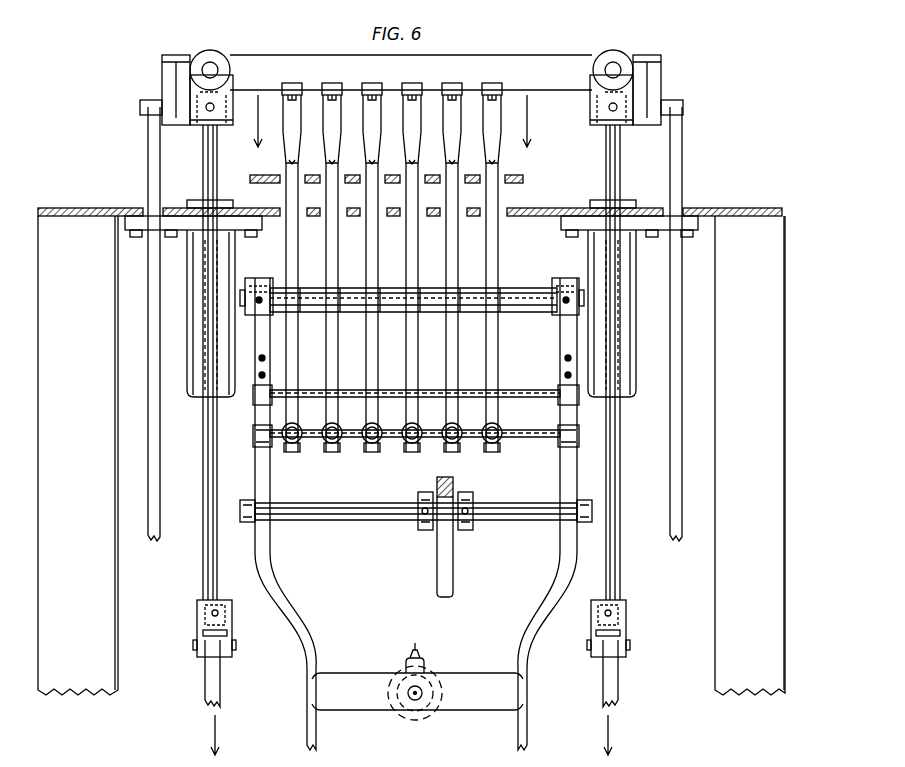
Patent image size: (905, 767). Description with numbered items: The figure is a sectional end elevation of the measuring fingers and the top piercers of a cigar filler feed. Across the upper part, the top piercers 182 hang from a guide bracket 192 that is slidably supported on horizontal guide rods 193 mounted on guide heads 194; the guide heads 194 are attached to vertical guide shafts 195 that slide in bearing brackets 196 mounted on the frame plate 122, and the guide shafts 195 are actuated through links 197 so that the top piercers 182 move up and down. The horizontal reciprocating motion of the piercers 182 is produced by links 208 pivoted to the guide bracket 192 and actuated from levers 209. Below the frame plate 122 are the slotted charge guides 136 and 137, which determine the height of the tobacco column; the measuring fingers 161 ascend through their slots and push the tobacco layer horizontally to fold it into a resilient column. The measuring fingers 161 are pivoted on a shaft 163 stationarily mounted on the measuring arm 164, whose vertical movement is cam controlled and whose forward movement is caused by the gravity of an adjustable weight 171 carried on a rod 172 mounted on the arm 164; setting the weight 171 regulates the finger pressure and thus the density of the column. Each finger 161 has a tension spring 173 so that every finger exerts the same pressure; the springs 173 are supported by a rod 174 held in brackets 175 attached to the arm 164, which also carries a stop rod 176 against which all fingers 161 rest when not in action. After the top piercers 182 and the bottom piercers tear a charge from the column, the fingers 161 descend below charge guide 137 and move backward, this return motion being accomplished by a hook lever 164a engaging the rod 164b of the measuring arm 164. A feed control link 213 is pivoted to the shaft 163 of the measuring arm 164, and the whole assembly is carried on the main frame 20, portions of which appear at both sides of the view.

The main frame 20 is at (112, 690).
The frame plate 122 is at (128, 207).
The charge guide 136 is at (270, 183).
The charge guide 137 is at (312, 217).
The measuring fingers 161 is at (446, 180).
The shaft 163 is at (243, 300).
The measuring arm 164 is at (556, 282).
The hook lever 164a is at (455, 588).
The rod 164b is at (372, 515).
The adjustable weight 171 is at (427, 666).
The rod 172 is at (422, 694).
The tension springs 173 is at (340, 447).
The rod 174 is at (512, 433).
The brackets 175 is at (253, 433).
The stop rod 176 is at (518, 397).
The top piercers 182 is at (333, 83).
The guide bracket 192 is at (548, 44).
The horizontal guide rods 193 is at (210, 68).
The guide heads 194 is at (196, 122).
The vertical guide shafts 195 is at (205, 178).
The bearing brackets 196 is at (200, 397).
The links 197 is at (220, 684).
The links 208 is at (165, 88).
The levers 209 is at (150, 147).
The link 213 is at (246, 284).